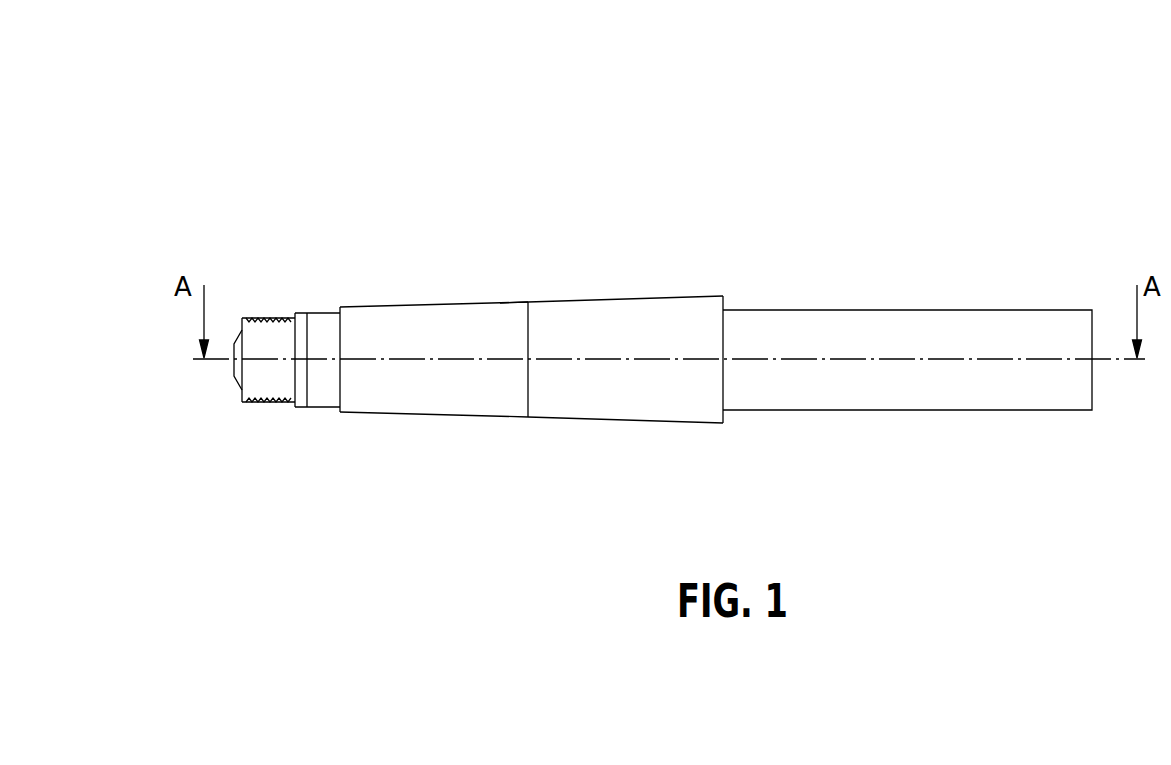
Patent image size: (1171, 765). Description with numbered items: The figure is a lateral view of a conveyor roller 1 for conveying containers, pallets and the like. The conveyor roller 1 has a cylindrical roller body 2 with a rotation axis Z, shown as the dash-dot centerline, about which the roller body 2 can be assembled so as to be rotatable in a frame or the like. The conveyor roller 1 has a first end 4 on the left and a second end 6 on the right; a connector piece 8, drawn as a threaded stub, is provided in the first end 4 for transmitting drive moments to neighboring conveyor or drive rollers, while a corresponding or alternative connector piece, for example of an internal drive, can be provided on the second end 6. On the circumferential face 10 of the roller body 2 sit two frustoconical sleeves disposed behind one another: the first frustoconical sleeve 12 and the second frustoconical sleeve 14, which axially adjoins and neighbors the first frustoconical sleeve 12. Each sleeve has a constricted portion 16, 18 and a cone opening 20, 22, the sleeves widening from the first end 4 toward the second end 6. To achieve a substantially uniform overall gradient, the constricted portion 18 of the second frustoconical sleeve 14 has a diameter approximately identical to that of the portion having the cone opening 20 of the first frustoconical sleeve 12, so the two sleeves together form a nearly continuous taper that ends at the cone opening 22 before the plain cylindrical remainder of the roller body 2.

The conveyor roller 1 is at (847, 97).
The roller body 2 is at (907, 356).
The first end 4 is at (332, 225).
The second end 6 is at (1106, 225).
The connector piece 8 is at (263, 328).
The circumferential face 10 is at (879, 325).
The first frustoconical sleeve 12 is at (496, 316).
The second frustoconical sleeve 14 is at (631, 317).
The constricted portion 16 is at (331, 433).
The constricted portion 18 is at (516, 436).
The cone opening 20 is at (514, 272).
The cone opening 22 is at (733, 275).
The rotation axis Z is at (443, 357).